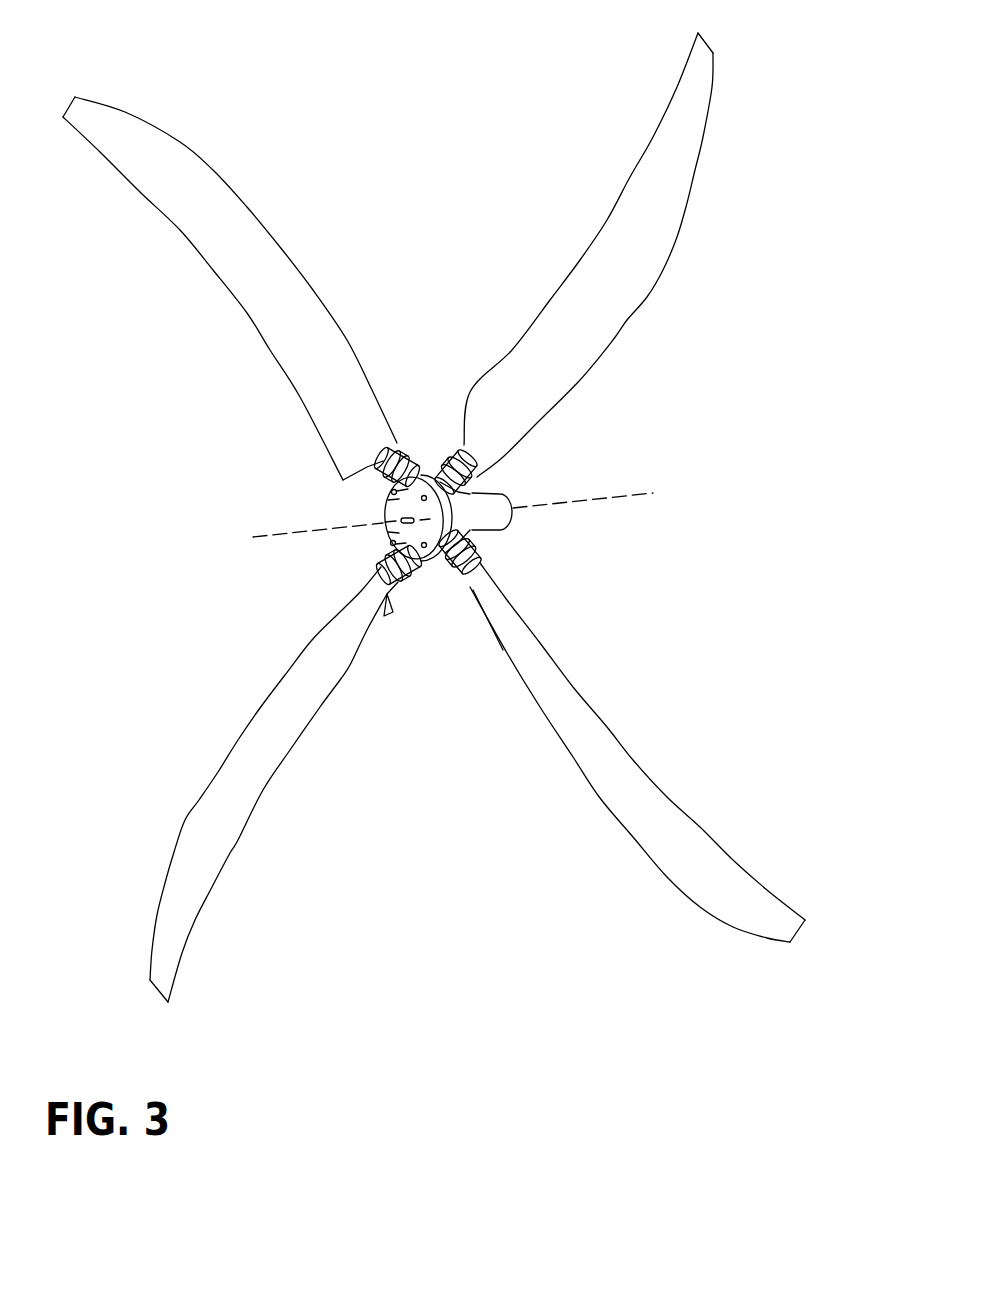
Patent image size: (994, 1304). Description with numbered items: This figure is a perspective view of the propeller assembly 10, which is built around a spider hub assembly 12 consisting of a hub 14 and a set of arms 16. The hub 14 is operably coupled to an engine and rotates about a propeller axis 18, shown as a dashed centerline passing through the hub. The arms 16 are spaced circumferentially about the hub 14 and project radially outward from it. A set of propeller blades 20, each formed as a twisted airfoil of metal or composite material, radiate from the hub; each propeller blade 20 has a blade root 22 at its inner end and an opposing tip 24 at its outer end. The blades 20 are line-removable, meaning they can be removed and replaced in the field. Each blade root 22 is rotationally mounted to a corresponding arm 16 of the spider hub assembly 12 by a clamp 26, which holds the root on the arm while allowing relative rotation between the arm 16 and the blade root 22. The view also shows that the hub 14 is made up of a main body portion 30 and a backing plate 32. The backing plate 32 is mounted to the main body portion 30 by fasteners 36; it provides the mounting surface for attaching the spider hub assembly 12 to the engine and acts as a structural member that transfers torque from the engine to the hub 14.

The propeller assembly 10 is at (261, 37).
The spider hub assembly 12 is at (424, 450).
The hub 14 is at (372, 529).
The arms 16 is at (472, 488).
The propeller axis 18 is at (613, 498).
The propeller blades 20 is at (700, 172).
The blade root 22 is at (468, 452).
The tip 24 is at (710, 45).
The clamp 26 is at (437, 460).
The main body portion 30 is at (458, 520).
The backing plate 32 is at (387, 536).
The fasteners 36 is at (390, 511).